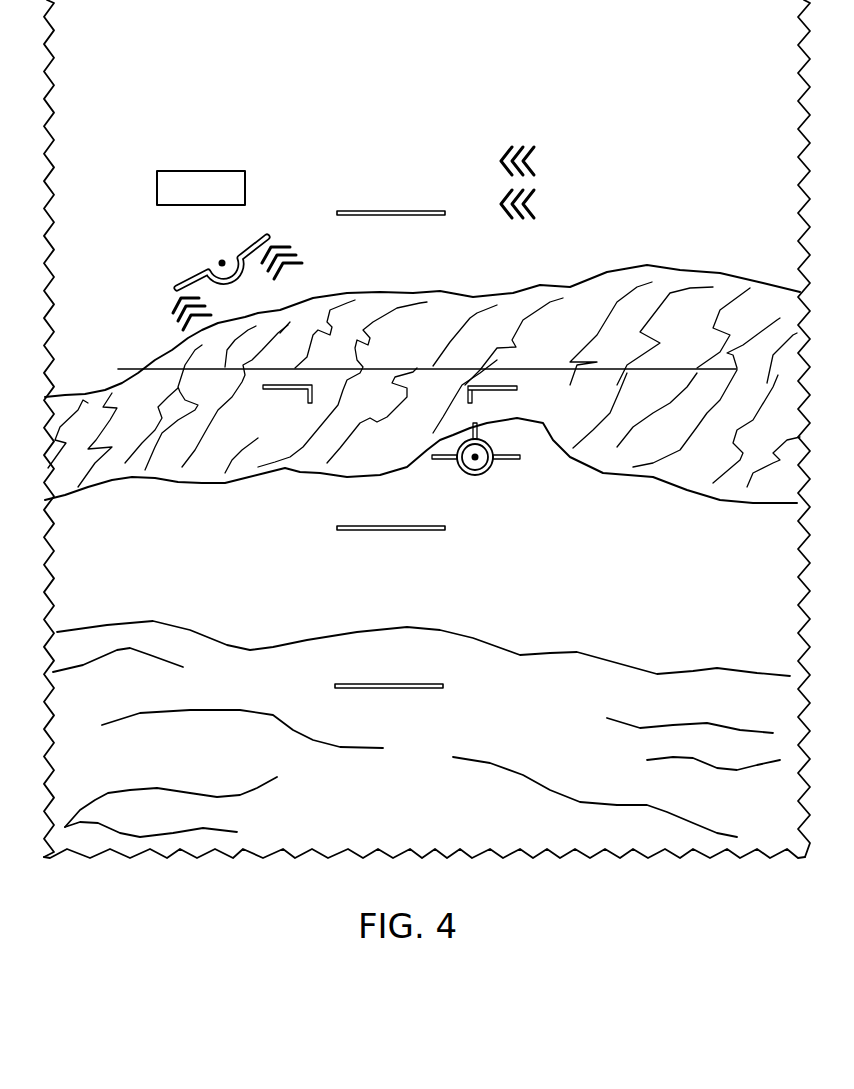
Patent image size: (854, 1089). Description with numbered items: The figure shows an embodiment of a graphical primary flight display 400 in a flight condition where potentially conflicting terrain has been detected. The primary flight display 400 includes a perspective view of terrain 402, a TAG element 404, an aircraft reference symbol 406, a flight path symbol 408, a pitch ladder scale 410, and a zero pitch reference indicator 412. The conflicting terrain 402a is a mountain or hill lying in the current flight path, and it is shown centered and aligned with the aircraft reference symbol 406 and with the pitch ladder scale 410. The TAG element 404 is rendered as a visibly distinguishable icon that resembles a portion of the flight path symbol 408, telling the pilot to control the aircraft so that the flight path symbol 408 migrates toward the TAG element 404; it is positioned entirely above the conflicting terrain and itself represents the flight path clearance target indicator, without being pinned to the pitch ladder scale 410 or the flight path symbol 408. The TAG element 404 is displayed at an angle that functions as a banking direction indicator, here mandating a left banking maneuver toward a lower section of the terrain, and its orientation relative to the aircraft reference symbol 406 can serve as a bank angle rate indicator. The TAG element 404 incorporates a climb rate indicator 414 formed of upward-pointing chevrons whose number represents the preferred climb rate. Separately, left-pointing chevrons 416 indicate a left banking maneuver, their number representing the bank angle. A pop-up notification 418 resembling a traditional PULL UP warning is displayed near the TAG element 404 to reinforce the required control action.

The primary flight display 400 is at (171, 101).
The terrain 402 is at (672, 267).
The conflicting terrain 402a is at (420, 290).
The TAG element 404 is at (186, 276).
The aircraft reference symbol 406 is at (285, 393).
The flight path symbol 408 is at (490, 470).
The pitch ladder scale 410 is at (385, 191).
The zero pitch reference indicator 412 is at (675, 368).
The climb rate indicator 414 is at (318, 284).
The chevrons 416 is at (536, 160).
The pop-up notification 418 is at (190, 172).